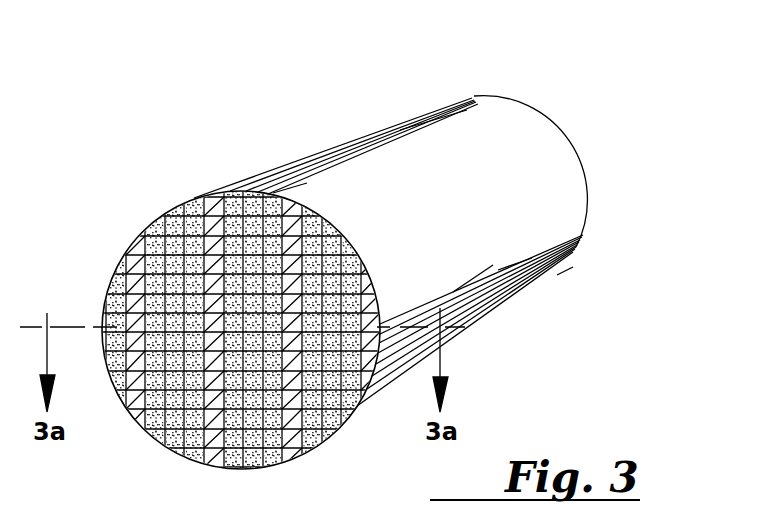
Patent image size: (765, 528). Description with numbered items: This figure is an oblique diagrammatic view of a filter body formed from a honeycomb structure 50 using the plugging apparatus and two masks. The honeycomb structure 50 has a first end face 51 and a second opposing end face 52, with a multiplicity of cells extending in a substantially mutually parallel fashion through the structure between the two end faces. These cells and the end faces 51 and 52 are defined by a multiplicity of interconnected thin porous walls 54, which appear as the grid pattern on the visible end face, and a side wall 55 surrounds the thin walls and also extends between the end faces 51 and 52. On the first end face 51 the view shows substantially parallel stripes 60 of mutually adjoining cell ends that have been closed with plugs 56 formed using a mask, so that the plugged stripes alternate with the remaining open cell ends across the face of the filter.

The honeycomb structure 50 is at (433, 209).
The first end face 51 is at (150, 440).
The second opposing end face 52 is at (574, 134).
The thin porous walls 54 is at (131, 256).
The side wall 55 is at (488, 229).
The plugs 56 is at (334, 396).
The stripes 60 is at (290, 203).